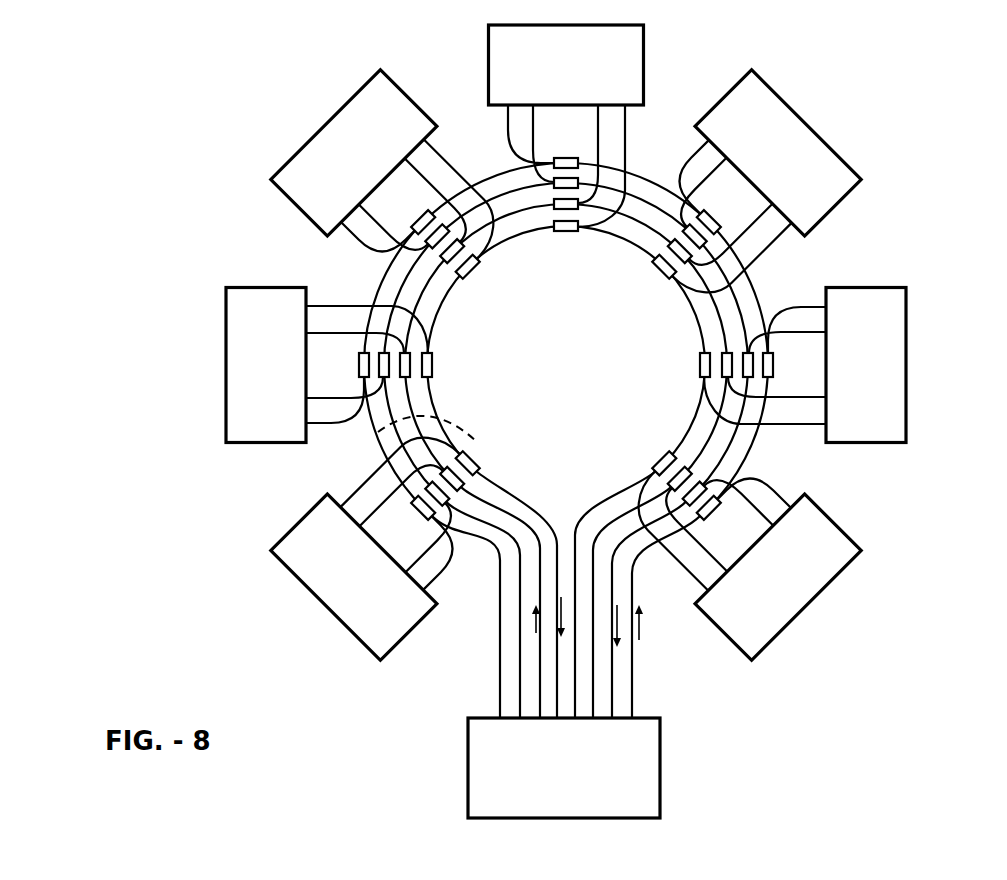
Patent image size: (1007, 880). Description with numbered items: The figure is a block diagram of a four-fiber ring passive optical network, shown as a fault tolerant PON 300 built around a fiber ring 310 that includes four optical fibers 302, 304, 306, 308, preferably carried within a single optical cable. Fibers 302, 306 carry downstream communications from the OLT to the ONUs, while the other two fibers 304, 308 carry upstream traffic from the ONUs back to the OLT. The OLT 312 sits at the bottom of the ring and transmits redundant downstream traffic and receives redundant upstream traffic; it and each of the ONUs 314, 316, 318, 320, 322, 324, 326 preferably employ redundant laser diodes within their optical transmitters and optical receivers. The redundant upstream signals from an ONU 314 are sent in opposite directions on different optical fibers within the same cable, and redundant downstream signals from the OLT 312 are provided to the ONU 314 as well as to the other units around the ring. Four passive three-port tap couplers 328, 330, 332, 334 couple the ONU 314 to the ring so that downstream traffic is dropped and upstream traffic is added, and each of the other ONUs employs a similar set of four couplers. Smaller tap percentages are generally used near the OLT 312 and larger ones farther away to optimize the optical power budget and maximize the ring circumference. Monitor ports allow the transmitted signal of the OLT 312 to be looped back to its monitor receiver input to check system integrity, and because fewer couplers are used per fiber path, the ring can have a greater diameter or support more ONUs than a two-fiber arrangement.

The fault tolerant PON 300 is at (143, 109).
The optical fiber 302 is at (444, 296).
The optical fiber 304 is at (438, 318).
The optical fiber 306 is at (435, 344).
The optical fiber 308 is at (438, 392).
The fiber ring 310 is at (480, 444).
The OLT 312 is at (468, 764).
The ONU 314 is at (805, 608).
The ONU 316 is at (907, 402).
The ONU 318 is at (837, 150).
The ONU 320 is at (646, 44).
The ONU 322 is at (290, 195).
The ONU 324 is at (230, 447).
The ONU 326 is at (350, 632).
The passive three-port tap coupler 328 is at (703, 485).
The passive three-port tap coupler 330 is at (700, 516).
The passive three-port tap coupler 332 is at (688, 470).
The passive three-port tap coupler 334 is at (656, 464).